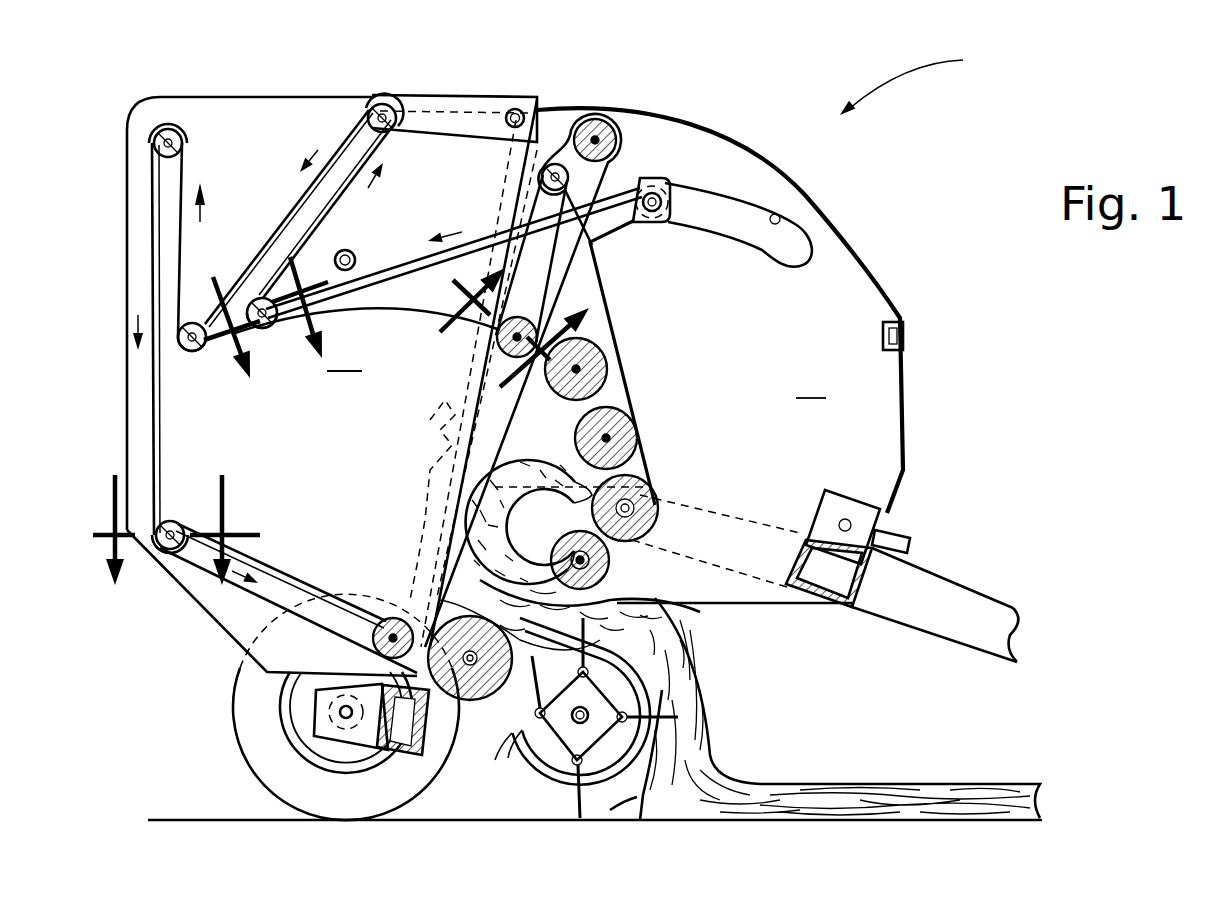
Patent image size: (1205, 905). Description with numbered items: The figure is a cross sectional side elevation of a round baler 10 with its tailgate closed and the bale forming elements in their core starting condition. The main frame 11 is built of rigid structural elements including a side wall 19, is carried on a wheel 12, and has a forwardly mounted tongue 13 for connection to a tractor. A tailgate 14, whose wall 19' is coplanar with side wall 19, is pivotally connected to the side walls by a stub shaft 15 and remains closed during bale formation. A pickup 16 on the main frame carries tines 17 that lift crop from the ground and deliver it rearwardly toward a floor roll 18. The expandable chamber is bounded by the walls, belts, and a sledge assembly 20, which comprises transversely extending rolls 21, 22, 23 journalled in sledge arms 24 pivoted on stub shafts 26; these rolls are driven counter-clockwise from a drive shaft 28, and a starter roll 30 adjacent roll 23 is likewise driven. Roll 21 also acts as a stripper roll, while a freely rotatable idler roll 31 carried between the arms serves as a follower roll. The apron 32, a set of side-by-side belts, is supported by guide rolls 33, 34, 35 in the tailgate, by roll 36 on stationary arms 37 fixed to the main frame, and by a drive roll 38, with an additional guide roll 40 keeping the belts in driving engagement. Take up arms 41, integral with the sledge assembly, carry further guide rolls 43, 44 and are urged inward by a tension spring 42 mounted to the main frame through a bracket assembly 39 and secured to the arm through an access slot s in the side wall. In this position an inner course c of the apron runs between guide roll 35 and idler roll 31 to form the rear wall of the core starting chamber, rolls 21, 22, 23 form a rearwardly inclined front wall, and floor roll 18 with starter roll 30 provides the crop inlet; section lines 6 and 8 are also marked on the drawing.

The round baler 10 is at (531, 314).
The main frame 11 is at (398, 560).
The wheel 12 is at (242, 744).
The tongue 13 is at (932, 605).
The tailgate 14 is at (204, 86).
The stub shaft 15 is at (514, 108).
The pickup 16 is at (642, 680).
The tines 17 is at (690, 705).
The floor roll 18 is at (492, 765).
The side wall 19 is at (720, 355).
The tailgate wall 19' is at (459, 463).
The sledge assembly 20 is at (638, 385).
The stripper roll 21 is at (606, 356).
The roll 22 is at (638, 438).
The roll 23 is at (655, 505).
The sledge arm 24 is at (613, 324).
The stub shaft 26 is at (640, 540).
The drive shaft 28 is at (905, 530).
The starter roll 30 is at (562, 543).
The idler roll 31 is at (522, 318).
The apron 32 is at (170, 438).
The guide roll 33 is at (155, 140).
The guide roll 34 is at (165, 552).
The guide roll 35 is at (390, 618).
The roll 36 is at (380, 104).
The stationary arm 37 is at (445, 110).
The drive roll 38 is at (612, 126).
The bracket assembly 39 is at (420, 446).
The guide roll 40 is at (556, 163).
The take up arm 41 is at (358, 255).
The tension spring 42 is at (615, 240).
The guide roll 43 is at (185, 350).
The guide roll 44 is at (262, 330).
The section line 6 is at (503, 347).
The section line 8 is at (258, 311).
The access slot s is at (784, 224).
The inner course c is at (467, 521).